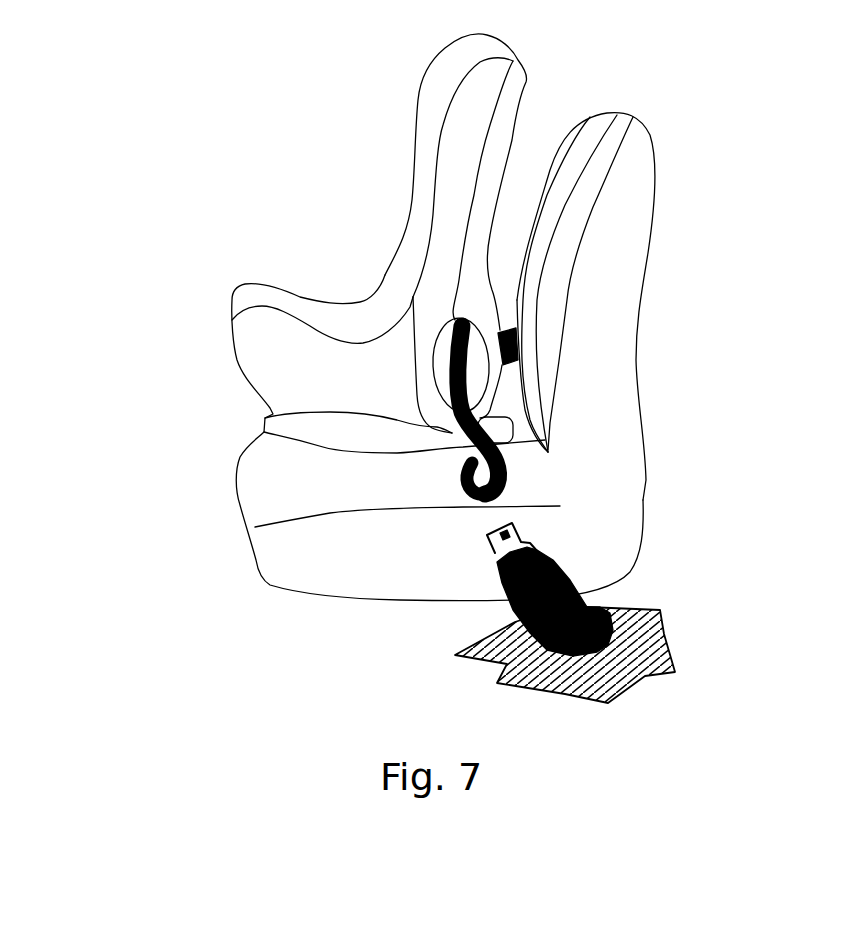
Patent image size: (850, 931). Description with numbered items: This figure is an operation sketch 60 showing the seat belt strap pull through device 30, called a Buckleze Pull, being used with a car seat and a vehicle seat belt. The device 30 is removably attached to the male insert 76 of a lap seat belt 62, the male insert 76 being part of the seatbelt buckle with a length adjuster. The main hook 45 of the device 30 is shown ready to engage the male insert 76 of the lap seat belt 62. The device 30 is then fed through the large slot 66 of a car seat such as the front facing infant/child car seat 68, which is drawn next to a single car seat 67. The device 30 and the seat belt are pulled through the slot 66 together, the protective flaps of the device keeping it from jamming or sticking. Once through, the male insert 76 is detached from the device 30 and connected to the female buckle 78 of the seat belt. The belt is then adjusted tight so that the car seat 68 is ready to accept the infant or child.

The operation sketch 60 is at (150, 740).
The front facing infant/child car seat 68 is at (488, 92).
The single car seat 67 is at (587, 377).
The seat belt strap pull through device 30 is at (492, 424).
The slot 66 is at (441, 368).
The female buckle 78 is at (505, 332).
The lap seat belt 62 is at (615, 603).
The main hook 45 is at (464, 480).
The male insert 76 is at (518, 543).